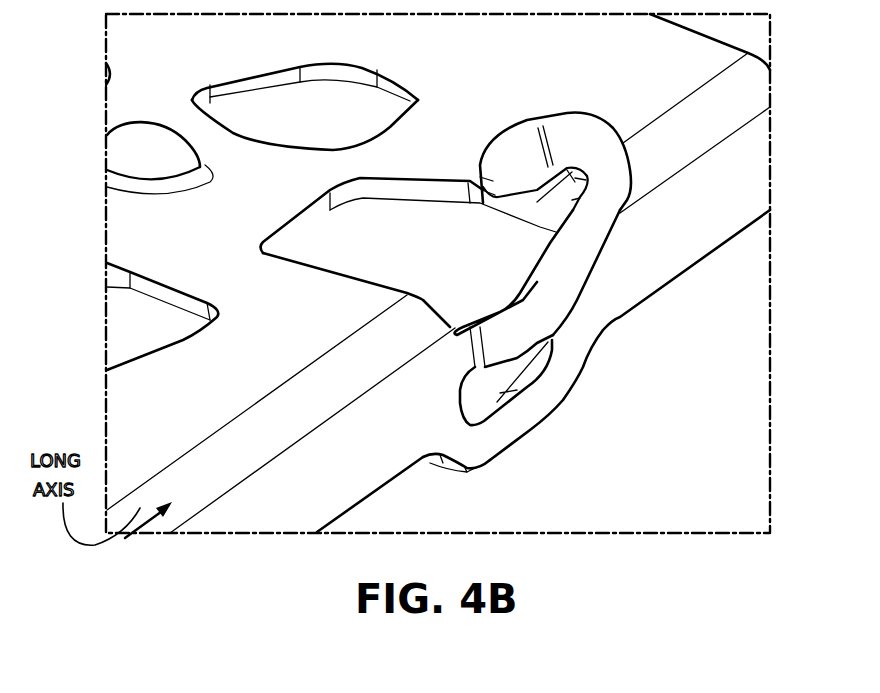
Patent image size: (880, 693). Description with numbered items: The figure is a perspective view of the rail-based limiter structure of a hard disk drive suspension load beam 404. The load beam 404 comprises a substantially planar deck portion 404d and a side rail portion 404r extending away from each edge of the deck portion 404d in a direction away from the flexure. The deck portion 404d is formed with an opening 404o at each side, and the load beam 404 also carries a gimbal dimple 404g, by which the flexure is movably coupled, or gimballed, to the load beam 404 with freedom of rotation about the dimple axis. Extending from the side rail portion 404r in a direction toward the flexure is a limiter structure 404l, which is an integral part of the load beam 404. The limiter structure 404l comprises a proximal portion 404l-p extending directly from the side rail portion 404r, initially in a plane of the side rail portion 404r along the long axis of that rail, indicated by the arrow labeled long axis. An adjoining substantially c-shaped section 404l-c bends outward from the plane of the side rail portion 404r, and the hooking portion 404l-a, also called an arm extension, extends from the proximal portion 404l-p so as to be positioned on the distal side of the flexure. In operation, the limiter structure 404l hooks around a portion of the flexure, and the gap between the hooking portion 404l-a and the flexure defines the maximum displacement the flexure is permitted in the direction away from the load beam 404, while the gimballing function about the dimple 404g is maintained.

The load beam 404 is at (170, 47).
The deck portion 404d is at (652, 82).
The gimbal dimple 404g is at (170, 172).
The opening 404o is at (370, 250).
The limiter structure 404l is at (580, 269).
The hooking portion 404l-a is at (522, 160).
The c-shaped section 404l-c is at (567, 267).
The proximal portion 404l-p is at (463, 360).
The side rail portion 404r is at (722, 125).